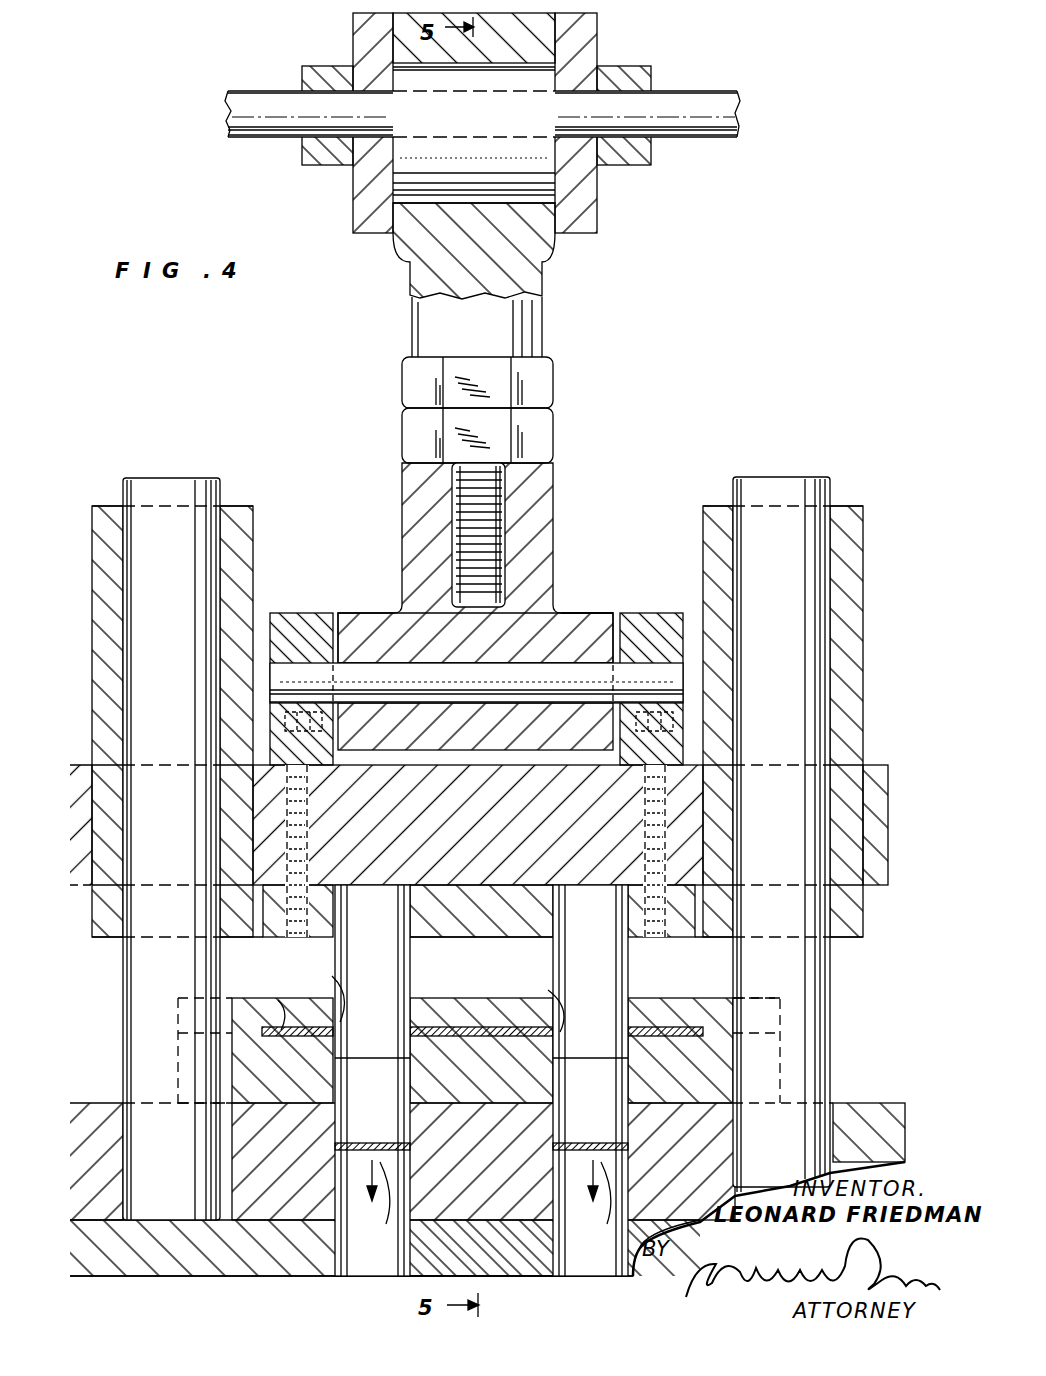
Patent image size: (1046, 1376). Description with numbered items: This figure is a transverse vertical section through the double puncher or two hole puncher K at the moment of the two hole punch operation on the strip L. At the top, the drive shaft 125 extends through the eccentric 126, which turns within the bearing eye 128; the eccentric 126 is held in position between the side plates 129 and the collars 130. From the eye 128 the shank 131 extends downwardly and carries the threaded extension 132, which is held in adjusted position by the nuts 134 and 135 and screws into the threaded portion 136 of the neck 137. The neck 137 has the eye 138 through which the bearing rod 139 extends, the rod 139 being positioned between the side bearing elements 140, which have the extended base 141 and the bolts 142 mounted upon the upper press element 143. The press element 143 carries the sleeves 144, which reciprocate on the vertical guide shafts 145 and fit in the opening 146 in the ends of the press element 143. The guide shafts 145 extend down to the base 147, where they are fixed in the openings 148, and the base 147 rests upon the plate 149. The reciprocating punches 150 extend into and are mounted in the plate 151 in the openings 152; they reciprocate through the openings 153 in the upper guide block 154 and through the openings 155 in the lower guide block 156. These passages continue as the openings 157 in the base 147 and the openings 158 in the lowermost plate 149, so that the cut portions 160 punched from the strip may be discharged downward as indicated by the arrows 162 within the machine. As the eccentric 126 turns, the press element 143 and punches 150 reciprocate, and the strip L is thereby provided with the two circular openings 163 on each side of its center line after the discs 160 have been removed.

The drive shaft 125 is at (680, 97).
The eccentric 126 is at (540, 72).
The bearing eye 128 is at (530, 232).
The side plates 129 is at (585, 184).
The collars 130 is at (650, 150).
The shank 131 is at (525, 326).
The threaded extension 132 is at (505, 518).
The nut 134 is at (540, 380).
The nut 135 is at (545, 447).
The threaded portion 136 is at (505, 572).
The neck 137 is at (540, 590).
The eye 138 is at (602, 617).
The bearing rod 139 is at (372, 668).
The side bearing elements 140 is at (305, 617).
The extended base 141 is at (665, 742).
The bolts 142 is at (665, 716).
The upper press element 143 is at (690, 830).
The sleeves 144 is at (853, 681).
The shafts 145 is at (206, 480).
The opening 146 is at (865, 835).
The base 147 is at (85, 1104).
The openings 148 is at (127, 1212).
The plate 149 is at (246, 1266).
The reciprocating punches 150 is at (410, 972).
The plate 151 is at (500, 938).
The openings 152 is at (412, 906).
The openings 153 is at (645, 1000).
The upper guide block 154 is at (719, 1001).
The openings 155 is at (408, 1078).
The lower guide block 156 is at (720, 1073).
The openings 157 is at (553, 1175).
The openings 158 is at (553, 1243).
The cut portions 160 is at (362, 1130).
The arrows 162 is at (497, 1209).
The openings 163 is at (421, 999).
The two hole puncher K is at (604, 418).
The strip L is at (279, 1027).